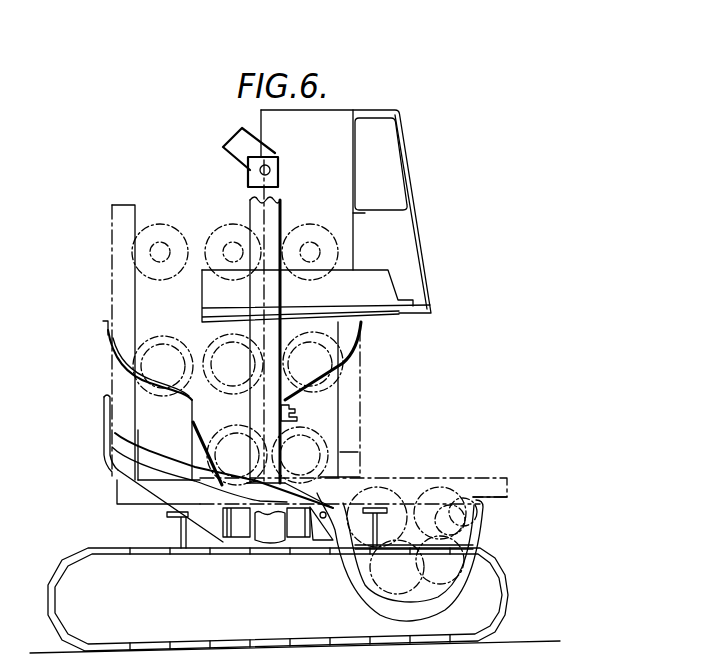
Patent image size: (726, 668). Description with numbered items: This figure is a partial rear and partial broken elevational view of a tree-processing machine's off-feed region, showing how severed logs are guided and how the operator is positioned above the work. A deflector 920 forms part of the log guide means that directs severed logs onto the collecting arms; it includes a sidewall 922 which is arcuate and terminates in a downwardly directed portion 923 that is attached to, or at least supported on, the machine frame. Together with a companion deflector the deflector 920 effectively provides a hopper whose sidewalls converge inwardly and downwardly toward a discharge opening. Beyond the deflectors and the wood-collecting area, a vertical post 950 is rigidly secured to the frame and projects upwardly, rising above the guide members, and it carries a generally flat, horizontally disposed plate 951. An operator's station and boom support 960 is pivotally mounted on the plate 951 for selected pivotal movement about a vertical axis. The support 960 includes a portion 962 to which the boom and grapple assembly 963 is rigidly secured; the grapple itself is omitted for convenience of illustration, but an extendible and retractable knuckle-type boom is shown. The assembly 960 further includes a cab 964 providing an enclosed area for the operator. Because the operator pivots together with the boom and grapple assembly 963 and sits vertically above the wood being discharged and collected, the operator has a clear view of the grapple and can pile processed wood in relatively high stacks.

The deflector 920 is at (104, 329).
The sidewall 922 is at (140, 372).
The downwardly directed portion 923 is at (195, 431).
The vertical post 950 is at (270, 452).
The plate 951 is at (363, 321).
The operator's station and boom support 960 is at (374, 293).
The portion 962 is at (280, 215).
The boom and grapple assembly 963 is at (279, 197).
The cab 964 is at (387, 159).